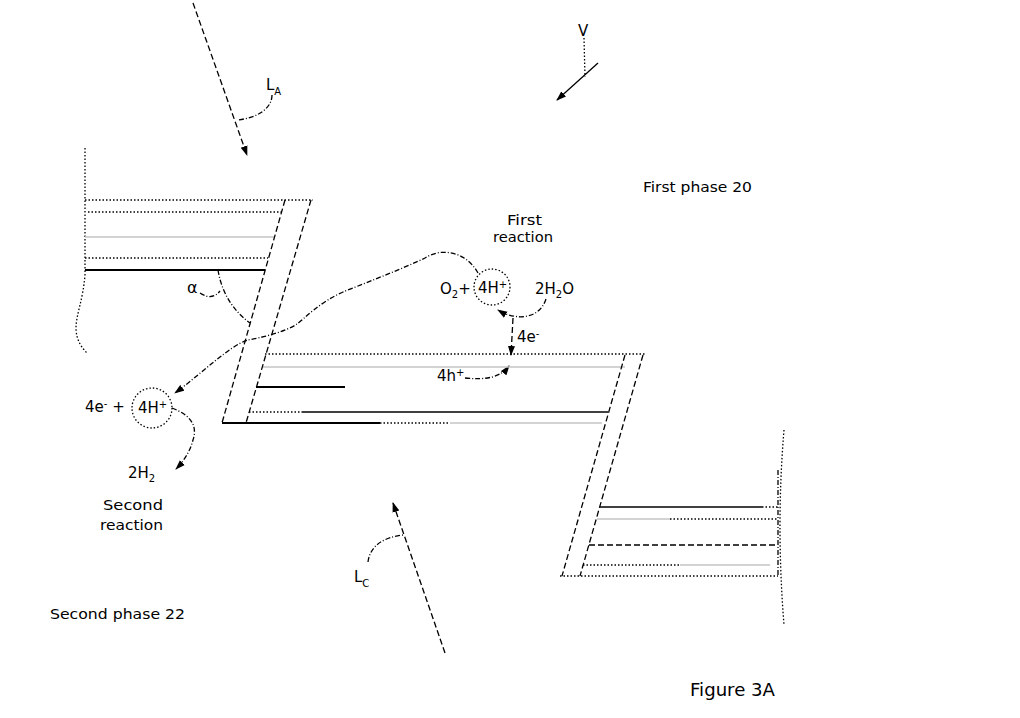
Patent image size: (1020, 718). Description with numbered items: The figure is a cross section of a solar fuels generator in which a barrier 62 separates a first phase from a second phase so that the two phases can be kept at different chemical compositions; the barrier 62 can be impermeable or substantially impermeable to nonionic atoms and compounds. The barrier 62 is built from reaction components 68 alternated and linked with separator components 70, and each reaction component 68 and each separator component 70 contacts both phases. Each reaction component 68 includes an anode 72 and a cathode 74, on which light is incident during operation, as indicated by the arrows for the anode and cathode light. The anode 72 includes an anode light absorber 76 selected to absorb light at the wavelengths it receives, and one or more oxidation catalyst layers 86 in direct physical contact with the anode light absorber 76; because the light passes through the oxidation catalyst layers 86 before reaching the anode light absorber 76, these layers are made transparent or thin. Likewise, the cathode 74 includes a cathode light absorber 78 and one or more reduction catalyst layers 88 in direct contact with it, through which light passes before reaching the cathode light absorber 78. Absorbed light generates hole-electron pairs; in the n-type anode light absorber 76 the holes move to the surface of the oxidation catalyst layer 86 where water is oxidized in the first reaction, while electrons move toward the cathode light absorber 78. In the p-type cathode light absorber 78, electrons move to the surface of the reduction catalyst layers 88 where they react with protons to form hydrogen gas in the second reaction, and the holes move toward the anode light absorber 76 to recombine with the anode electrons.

The barrier 62 is at (71, 232).
The reaction component 68 is at (139, 182).
The separator component 70 is at (242, 331).
The anode 72 is at (292, 229).
The cathode 74 is at (292, 245).
The anode light absorber 76 is at (139, 228).
The cathode light absorber 78 is at (100, 245).
The oxidation catalyst layer 86 is at (190, 208).
The reduction catalyst layer 88 is at (127, 268).